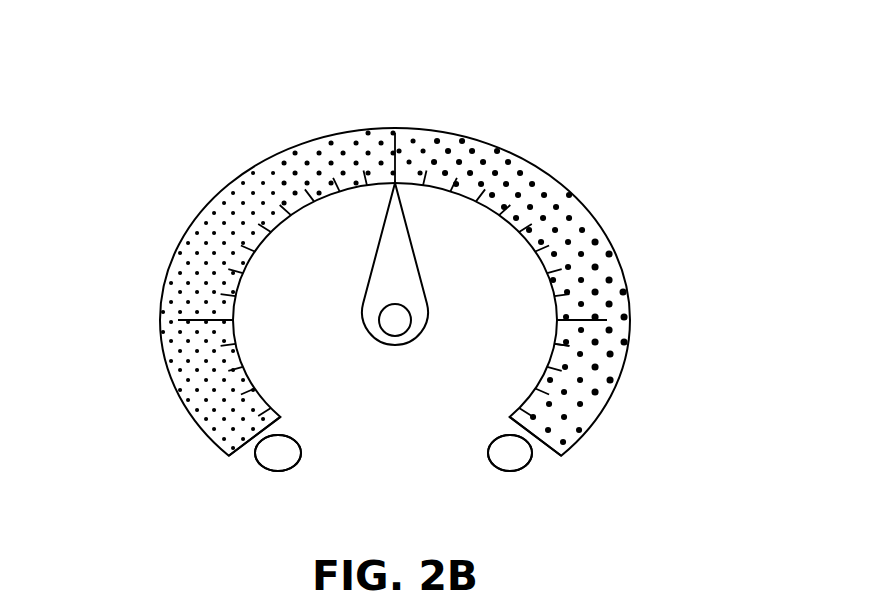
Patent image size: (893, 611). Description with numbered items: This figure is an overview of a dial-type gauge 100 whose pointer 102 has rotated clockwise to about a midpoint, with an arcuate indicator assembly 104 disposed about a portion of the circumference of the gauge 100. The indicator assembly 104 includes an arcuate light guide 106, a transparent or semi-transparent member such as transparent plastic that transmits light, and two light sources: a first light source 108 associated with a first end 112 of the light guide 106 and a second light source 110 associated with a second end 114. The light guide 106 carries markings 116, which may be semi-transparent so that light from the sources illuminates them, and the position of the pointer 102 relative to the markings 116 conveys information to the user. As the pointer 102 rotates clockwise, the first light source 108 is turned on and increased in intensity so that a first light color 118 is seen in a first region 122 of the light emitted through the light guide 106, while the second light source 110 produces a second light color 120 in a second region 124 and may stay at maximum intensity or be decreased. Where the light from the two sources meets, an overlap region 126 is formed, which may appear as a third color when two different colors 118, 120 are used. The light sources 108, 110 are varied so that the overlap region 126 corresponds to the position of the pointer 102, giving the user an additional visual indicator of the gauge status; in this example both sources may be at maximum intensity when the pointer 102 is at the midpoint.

The dial-type gauge 100 is at (358, 340).
The pointer 102 is at (418, 280).
The arcuate indicator assembly 104 is at (658, 144).
The light guide 106 is at (238, 200).
The first light source 108 is at (276, 471).
The second light source 110 is at (514, 471).
The first end 112 is at (178, 467).
The second end 114 is at (596, 466).
The markings 116 is at (572, 334).
The first light color 118 is at (300, 453).
The second light color 120 is at (489, 453).
The first region 122 is at (144, 162).
The second region 124 is at (645, 453).
The overlap region 126 is at (455, 122).